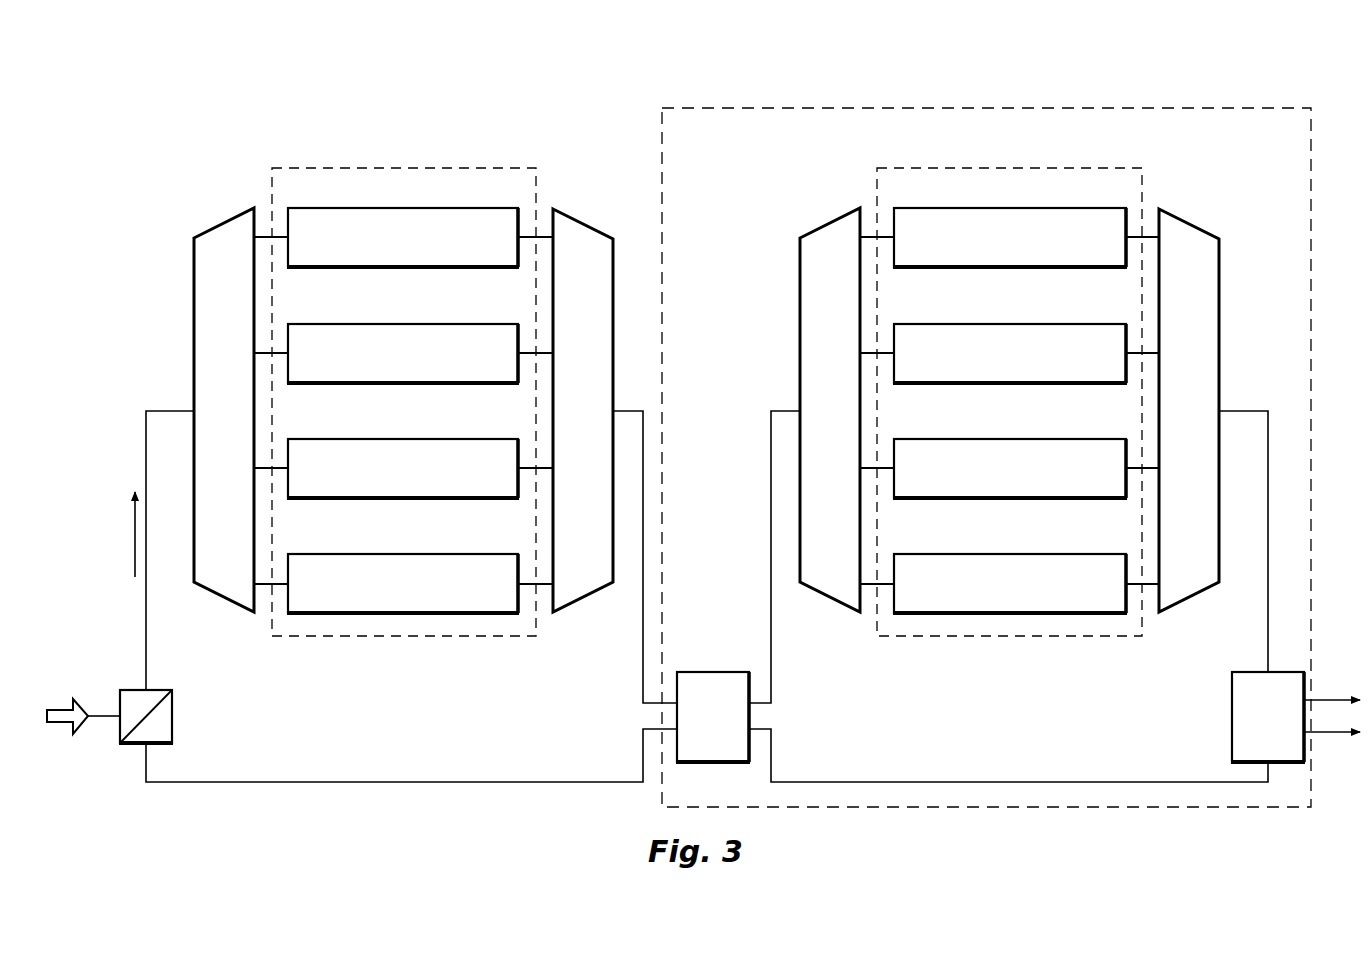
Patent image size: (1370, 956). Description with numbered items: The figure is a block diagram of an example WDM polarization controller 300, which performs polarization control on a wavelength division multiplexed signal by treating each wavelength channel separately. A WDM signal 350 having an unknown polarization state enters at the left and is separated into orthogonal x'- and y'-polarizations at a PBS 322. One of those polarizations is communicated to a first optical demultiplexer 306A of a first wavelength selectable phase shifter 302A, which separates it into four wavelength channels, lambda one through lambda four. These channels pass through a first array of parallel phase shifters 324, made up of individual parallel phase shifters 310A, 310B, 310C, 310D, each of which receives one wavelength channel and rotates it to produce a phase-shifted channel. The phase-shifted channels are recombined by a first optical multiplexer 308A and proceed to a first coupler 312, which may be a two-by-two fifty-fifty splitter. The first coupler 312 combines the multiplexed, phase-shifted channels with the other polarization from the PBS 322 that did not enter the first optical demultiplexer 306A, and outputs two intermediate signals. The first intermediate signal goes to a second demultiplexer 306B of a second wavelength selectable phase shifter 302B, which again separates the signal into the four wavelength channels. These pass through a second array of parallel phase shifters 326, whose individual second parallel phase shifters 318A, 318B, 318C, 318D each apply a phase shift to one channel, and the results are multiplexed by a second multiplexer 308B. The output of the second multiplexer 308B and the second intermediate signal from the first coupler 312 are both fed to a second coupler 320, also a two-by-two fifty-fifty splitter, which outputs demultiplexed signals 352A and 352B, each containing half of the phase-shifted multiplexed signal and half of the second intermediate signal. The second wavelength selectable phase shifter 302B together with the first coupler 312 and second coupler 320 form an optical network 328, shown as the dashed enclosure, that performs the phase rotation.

The WDM polarization controller 300 is at (181, 92).
The first wavelength selectable phase shifter 302A is at (255, 187).
The second wavelength selectable phase shifter 302B is at (862, 187).
The first optical demultiplexer 306A is at (246, 420).
The second demultiplexer 306B is at (852, 420).
The first optical multiplexer 308A is at (605, 420).
The second multiplexer 308B is at (1211, 420).
The first parallel phase shifter 310A is at (425, 261).
The second parallel phase shifter 310B is at (425, 377).
The third parallel phase shifter 310C is at (425, 492).
The fourth parallel phase shifter 310D is at (403, 583).
The first coupler 312 is at (698, 749).
The first of the second parallel phase shifters 318A is at (1032, 261).
The second of the second parallel phase shifters 318B is at (1032, 377).
The third of the second parallel phase shifters 318C is at (1032, 492).
The fourth of the second parallel phase shifters 318D is at (1010, 583).
The second coupler 320 is at (1253, 749).
The PBS 322 is at (173, 691).
The first array of parallel phase shifters 324 is at (530, 193).
The second array of parallel phase shifters 326 is at (1135, 193).
The optical network 328 is at (1303, 133).
The WDM signal 350 is at (55, 707).
The demultiplexed signal 352A is at (1331, 735).
The demultiplexed signal 352B is at (1330, 698).